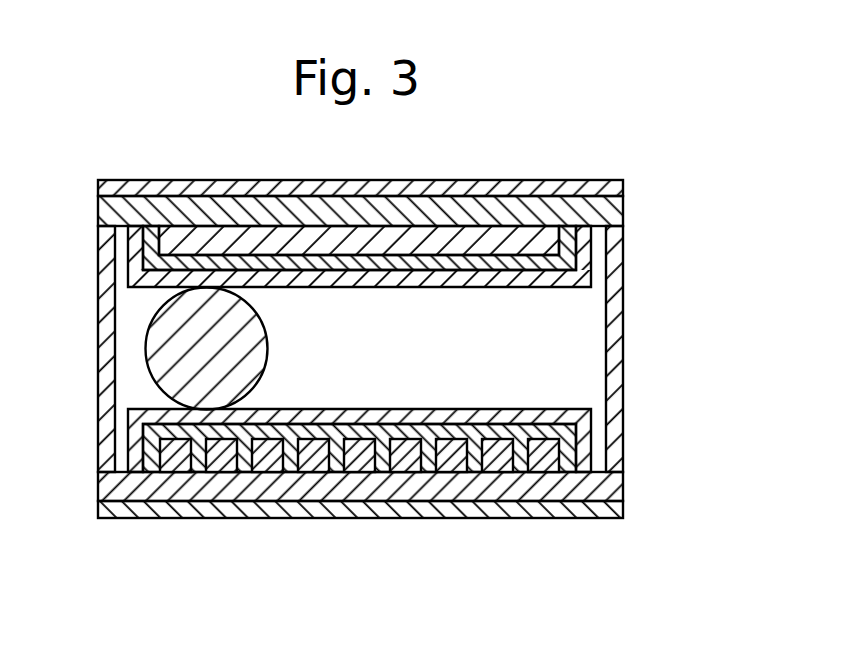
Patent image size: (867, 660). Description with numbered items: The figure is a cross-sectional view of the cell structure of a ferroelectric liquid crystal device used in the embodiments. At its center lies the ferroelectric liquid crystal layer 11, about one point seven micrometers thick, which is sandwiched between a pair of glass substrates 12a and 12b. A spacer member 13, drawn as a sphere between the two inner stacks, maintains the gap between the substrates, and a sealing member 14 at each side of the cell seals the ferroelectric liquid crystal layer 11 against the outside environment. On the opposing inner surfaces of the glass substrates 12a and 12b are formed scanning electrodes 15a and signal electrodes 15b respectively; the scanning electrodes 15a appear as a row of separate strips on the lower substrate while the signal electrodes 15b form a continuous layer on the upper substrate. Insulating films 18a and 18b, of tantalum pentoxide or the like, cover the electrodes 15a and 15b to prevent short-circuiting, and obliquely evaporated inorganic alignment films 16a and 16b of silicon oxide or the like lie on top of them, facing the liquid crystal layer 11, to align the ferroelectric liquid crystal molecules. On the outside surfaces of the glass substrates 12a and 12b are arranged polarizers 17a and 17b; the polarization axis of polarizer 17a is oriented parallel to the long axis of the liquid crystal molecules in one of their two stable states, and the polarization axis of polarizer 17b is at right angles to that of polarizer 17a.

The ferroelectric liquid crystal layer 11 is at (572, 355).
The glass substrate 12a is at (475, 490).
The glass substrate 12b is at (605, 220).
The spacer member 13 is at (163, 348).
The sealing member 14 is at (102, 273).
The scanning electrodes 15a is at (550, 460).
The signal electrodes 15b is at (357, 237).
The inorganic alignment film 16a is at (587, 419).
The inorganic alignment film 16b is at (493, 278).
The polarizer 17a is at (245, 510).
The polarizer 17b is at (588, 188).
The insulating film 18a is at (152, 453).
The insulating film 18b is at (148, 237).